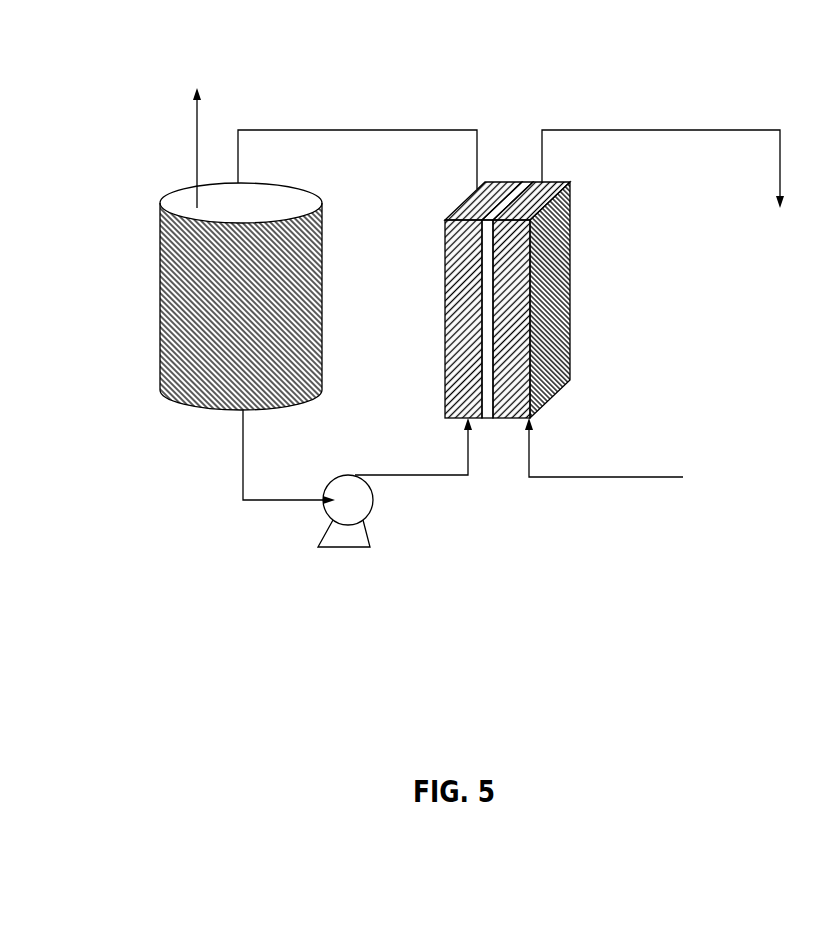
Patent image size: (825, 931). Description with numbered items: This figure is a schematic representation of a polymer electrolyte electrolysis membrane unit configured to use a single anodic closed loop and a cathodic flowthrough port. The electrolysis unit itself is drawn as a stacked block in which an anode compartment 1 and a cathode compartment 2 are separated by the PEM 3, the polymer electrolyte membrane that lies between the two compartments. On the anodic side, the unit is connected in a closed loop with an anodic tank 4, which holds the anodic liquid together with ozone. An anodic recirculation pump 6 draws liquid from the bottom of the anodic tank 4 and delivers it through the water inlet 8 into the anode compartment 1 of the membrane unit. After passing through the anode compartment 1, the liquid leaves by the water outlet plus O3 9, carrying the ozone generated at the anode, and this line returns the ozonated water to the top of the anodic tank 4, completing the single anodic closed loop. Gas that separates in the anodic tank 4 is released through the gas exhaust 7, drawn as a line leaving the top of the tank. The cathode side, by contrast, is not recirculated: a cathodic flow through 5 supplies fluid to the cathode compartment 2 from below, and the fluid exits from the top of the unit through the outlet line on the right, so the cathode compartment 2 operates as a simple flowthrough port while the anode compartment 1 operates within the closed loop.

The anode compartment 1 is at (465, 202).
The cathode compartment 2 is at (529, 199).
The PEM 3 is at (516, 186).
The anodic tank 4 is at (197, 355).
The cathodic flow through 5 is at (588, 481).
The anodic recirculation pump 6 is at (346, 546).
The gas exhaust 7 is at (193, 137).
The water inlet 8 is at (459, 479).
The water outlet plus O3 9 is at (261, 128).